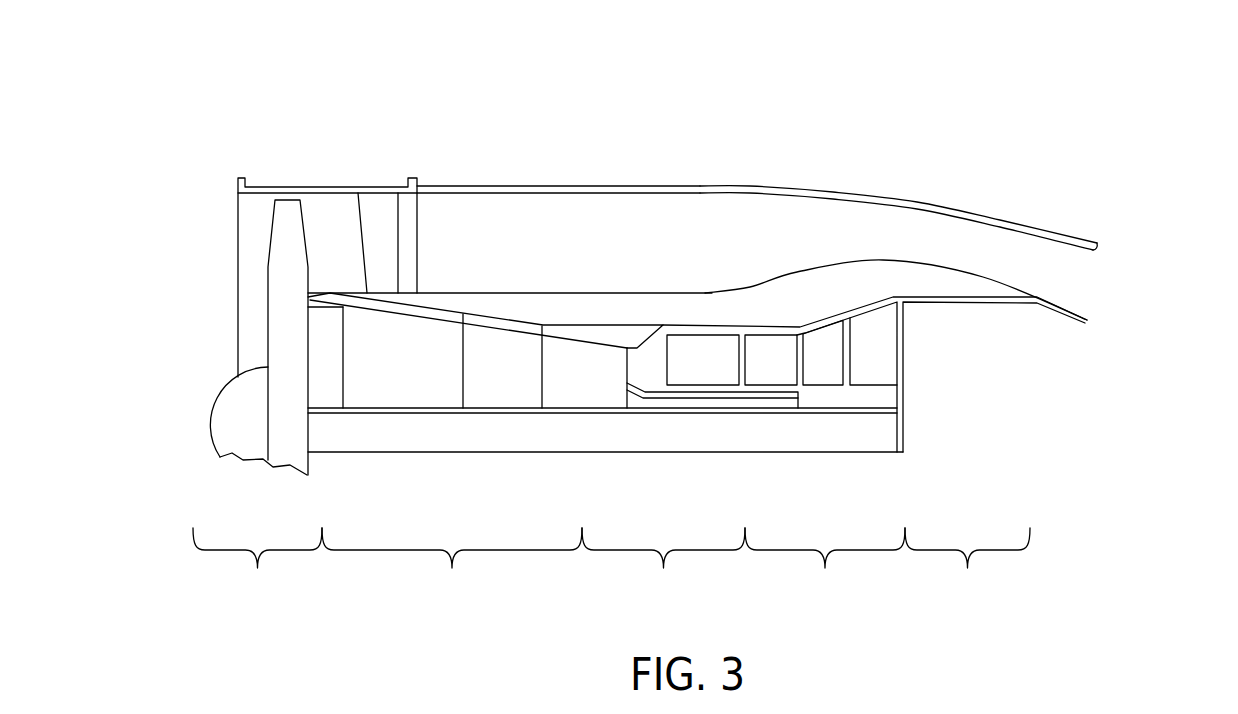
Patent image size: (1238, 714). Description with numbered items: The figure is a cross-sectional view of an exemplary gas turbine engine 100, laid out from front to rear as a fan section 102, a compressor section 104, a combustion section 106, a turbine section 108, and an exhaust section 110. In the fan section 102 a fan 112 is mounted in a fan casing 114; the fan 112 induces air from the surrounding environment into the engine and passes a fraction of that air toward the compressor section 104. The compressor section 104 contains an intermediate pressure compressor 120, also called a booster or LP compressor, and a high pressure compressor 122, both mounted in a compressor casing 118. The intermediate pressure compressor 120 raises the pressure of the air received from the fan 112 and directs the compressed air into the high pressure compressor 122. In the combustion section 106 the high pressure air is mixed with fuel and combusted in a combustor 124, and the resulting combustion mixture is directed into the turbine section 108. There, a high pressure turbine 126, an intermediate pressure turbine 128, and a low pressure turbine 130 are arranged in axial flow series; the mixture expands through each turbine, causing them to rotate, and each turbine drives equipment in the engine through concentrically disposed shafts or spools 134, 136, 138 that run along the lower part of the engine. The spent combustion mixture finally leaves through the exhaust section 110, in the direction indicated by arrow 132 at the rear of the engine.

The gas turbine engine 100 is at (752, 149).
The fan section 102 is at (257, 564).
The compressor section 104 is at (452, 564).
The combustion section 106 is at (663, 564).
The turbine section 108 is at (825, 564).
The exhaust section 110 is at (967, 564).
The fan 112 is at (280, 294).
The fan casing 114 is at (336, 186).
The compressor casing 118 is at (658, 293).
The intermediate pressure compressor 120 is at (410, 398).
The high pressure compressor 122 is at (583, 398).
The combustor 124 is at (712, 348).
The high pressure turbine 126 is at (773, 345).
The intermediate pressure turbine 128 is at (828, 345).
The low pressure turbine 130 is at (885, 328).
The exhaust flow direction 132 is at (1126, 355).
The shaft 134 is at (670, 395).
The shaft 136 is at (752, 410).
The shaft 138 is at (817, 443).